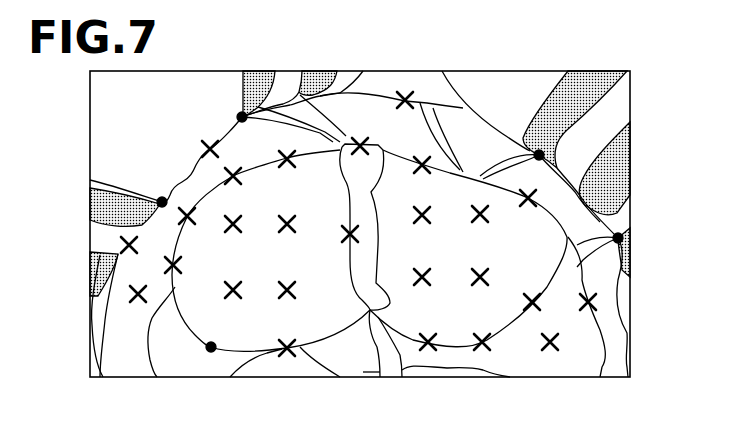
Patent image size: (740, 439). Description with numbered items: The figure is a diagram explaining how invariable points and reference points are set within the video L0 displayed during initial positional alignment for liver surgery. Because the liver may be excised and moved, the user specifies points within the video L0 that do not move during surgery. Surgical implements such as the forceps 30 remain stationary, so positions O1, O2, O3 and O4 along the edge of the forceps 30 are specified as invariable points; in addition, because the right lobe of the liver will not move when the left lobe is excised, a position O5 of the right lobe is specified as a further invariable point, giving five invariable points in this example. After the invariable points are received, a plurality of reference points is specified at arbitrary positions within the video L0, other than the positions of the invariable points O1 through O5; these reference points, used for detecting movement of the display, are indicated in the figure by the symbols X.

The invariable point O1 is at (539, 155).
The invariable point O2 is at (162, 202).
The invariable point O3 is at (242, 117).
The invariable point O4 is at (618, 238).
The invariable point O5 is at (211, 347).
The video L0 is at (398, 70).
The forceps 30 is at (588, 80).